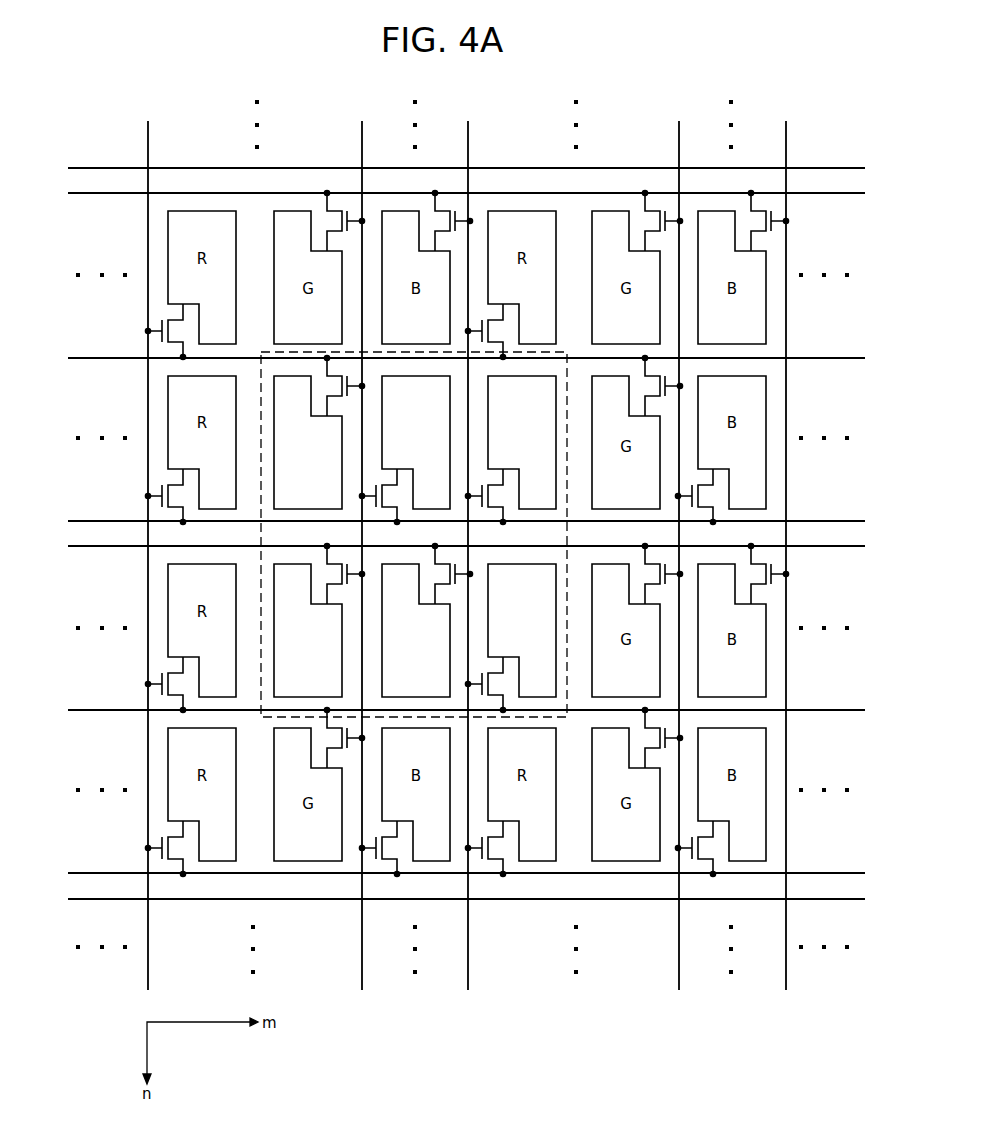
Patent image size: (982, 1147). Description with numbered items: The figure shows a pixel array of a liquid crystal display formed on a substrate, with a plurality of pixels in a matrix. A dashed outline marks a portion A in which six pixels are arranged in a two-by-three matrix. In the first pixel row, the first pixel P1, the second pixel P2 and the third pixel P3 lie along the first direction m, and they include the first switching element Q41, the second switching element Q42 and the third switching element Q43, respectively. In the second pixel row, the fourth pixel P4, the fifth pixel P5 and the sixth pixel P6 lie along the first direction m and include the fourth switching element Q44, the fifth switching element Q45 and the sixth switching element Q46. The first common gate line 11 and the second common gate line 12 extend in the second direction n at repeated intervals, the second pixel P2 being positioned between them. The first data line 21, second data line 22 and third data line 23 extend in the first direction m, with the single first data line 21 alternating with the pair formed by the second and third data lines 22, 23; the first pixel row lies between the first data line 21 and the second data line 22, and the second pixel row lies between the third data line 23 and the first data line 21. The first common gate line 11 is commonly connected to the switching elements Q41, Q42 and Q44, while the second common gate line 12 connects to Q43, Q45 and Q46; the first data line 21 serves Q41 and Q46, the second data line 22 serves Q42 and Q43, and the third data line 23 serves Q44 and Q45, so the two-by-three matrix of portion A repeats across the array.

The first common gate line 11 is at (519, 545).
The second common gate line 12 is at (465, 545).
The first data line 21 is at (453, 535).
The second data line 22 is at (453, 521).
The third data line 23 is at (453, 547).
The first switching element Q41 is at (319, 433).
The second switching element Q42 is at (405, 450).
The third switching element Q43 is at (511, 450).
The fourth switching element Q44 is at (319, 621).
The fifth switching element Q45 is at (427, 621).
The sixth switching element Q46 is at (511, 638).
The first pixel P1 is at (319, 433).
The second pixel P2 is at (405, 450).
The third pixel P3 is at (511, 450).
The fourth pixel P4 is at (319, 621).
The fifth pixel P5 is at (427, 621).
The sixth pixel P6 is at (511, 638).
The 2×3 matrix portion A is at (568, 533).